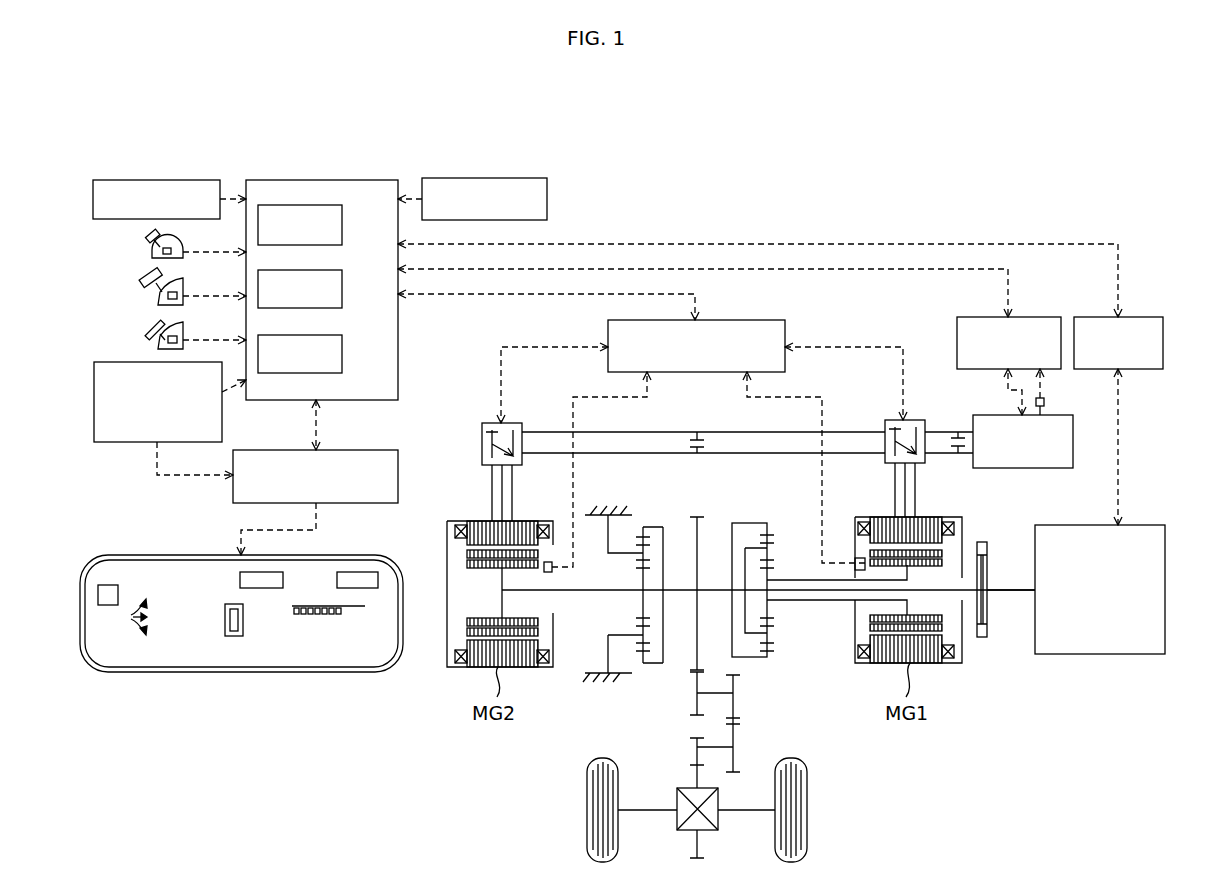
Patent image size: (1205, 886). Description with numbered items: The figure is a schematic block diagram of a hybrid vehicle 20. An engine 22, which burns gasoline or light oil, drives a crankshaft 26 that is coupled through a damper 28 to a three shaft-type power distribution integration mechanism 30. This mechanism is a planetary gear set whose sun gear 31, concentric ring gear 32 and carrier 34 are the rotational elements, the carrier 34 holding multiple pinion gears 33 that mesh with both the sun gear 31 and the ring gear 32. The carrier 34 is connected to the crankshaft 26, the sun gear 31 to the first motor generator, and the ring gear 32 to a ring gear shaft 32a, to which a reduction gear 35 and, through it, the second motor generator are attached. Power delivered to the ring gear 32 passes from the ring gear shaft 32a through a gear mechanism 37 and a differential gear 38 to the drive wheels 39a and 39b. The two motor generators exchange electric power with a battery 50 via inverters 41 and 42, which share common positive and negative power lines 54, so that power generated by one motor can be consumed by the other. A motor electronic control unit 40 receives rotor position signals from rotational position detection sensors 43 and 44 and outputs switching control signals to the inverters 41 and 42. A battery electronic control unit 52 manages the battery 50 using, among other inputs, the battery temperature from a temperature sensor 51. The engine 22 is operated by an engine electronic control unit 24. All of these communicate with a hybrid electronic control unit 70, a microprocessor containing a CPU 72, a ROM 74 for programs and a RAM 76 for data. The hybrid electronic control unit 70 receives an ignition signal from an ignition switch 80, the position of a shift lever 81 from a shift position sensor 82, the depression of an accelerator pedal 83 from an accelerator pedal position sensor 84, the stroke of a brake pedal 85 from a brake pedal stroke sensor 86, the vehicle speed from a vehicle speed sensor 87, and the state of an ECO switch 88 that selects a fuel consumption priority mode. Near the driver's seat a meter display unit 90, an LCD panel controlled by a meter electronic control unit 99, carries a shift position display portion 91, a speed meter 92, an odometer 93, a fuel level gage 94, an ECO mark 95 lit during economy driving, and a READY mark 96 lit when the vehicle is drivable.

The hybrid vehicle 20 is at (1137, 228).
The engine 22 is at (1100, 525).
The engine electronic control unit 24 is at (1155, 317).
The crankshaft 26 is at (1005, 592).
The damper 28 is at (982, 637).
The power distribution integration mechanism 30 is at (775, 525).
The sun gear 31 is at (770, 612).
The ring gear 32 is at (770, 653).
The ring gear shaft 32a is at (680, 600).
The pinion gears 33 is at (770, 636).
The carrier 34 is at (745, 560).
The reduction gear 35 is at (648, 525).
The gear mechanism 37 is at (750, 737).
The differential gear 38 is at (687, 788).
The drive wheel 39a is at (587, 810).
The drive wheel 39b is at (807, 810).
The motor electronic control unit 40 is at (775, 320).
The inverter 41 is at (920, 420).
The inverter 42 is at (518, 423).
The rotational position detection sensor 43 is at (856, 556).
The rotational position detection sensor 44 is at (548, 560).
The battery 50 is at (973, 462).
The temperature sensor 51 is at (1044, 402).
The battery electronic control unit 52 is at (1052, 317).
The power lines 54 is at (668, 455).
The hybrid electronic control unit 70 is at (312, 180).
The CPU 72 is at (345, 222).
The ROM 74 is at (345, 287).
The RAM 76 is at (345, 352).
The ignition switch 80 is at (93, 199).
The shift lever 81 is at (148, 238).
The shift position sensor 82 is at (152, 253).
The accelerator pedal 83 is at (140, 280).
The accelerator pedal position sensor 84 is at (158, 300).
The brake pedal 85 is at (150, 330).
The brake pedal stroke sensor 86 is at (158, 346).
The vehicle speed sensor 87 is at (94, 400).
The ECO switch 88 is at (549, 198).
The meter display unit 90 is at (88, 565).
The shift position display portion 91 is at (120, 635).
The speed meter 92 is at (200, 637).
The odometer 93 is at (322, 643).
The fuel level gage 94 is at (323, 596).
The ECO mark 95 is at (378, 572).
The READY mark 96 is at (240, 580).
The meter electronic control unit 99 is at (379, 450).